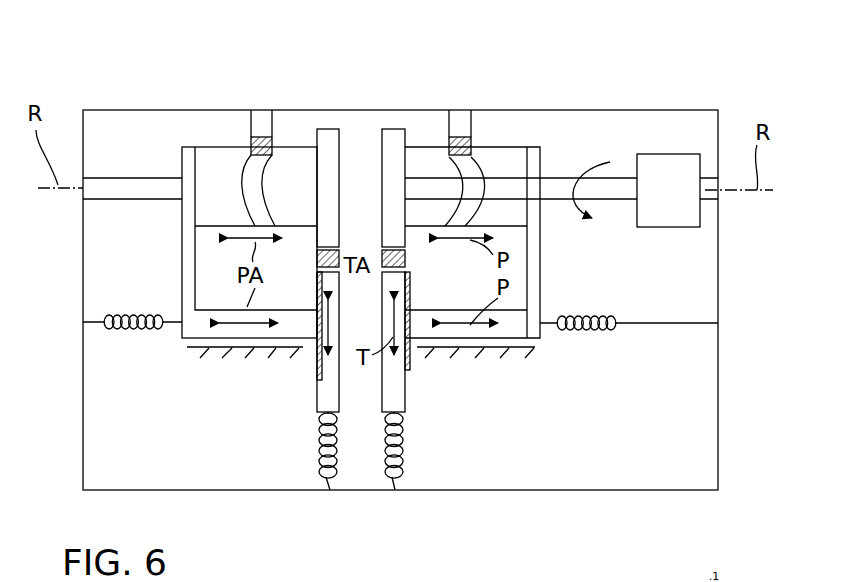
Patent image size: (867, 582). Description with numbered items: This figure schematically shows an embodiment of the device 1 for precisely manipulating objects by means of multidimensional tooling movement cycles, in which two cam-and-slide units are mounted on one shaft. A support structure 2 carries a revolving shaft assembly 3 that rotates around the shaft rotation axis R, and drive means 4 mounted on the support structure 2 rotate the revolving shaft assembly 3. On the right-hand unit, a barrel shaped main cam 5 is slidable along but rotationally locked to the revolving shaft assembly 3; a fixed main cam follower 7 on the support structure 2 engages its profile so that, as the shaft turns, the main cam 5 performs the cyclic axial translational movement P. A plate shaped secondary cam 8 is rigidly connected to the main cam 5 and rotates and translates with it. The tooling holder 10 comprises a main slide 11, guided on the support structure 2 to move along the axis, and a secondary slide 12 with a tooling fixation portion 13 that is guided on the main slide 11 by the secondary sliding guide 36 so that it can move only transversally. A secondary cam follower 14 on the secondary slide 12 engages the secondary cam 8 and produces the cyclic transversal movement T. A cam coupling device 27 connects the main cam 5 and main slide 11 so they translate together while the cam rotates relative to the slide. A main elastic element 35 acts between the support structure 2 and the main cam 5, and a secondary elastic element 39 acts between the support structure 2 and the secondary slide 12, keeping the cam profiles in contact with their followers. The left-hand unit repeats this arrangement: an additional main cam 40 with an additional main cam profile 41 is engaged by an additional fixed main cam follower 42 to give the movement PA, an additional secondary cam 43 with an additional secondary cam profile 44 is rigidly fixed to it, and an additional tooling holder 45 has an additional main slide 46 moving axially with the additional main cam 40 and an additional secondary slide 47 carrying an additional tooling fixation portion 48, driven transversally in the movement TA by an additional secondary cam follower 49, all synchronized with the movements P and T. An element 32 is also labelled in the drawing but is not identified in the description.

The device 1 is at (586, 95).
The support structure 2 is at (718, 135).
The revolving shaft assembly 3 is at (621, 187).
The drive means 4 is at (670, 154).
The main cam 5 is at (513, 150).
The fixed main cam follower 7 is at (472, 137).
The secondary cam 8 is at (398, 130).
The tooling holder 10 is at (418, 300).
The main slide 11 is at (520, 332).
The secondary slide 12 is at (393, 278).
The tooling fixation portion 13 is at (388, 398).
The secondary cam follower 14 is at (384, 184).
The cam coupling device 27 is at (540, 260).
The second bearing surface 32 is at (485, 345).
The main elastic element 35 is at (657, 324).
The secondary sliding guide 36 is at (407, 355).
The secondary elastic element 39 is at (403, 455).
The additional main cam 40 is at (210, 162).
The additional main cam profile 41 is at (255, 183).
The additional fixed main cam follower 42 is at (255, 140).
The additional secondary cam 43 is at (341, 248).
The additional secondary cam profile 44 is at (326, 130).
The additional tooling holder 45 is at (304, 365).
The additional main slide 46 is at (227, 333).
The additional secondary slide 47 is at (337, 383).
The additional tooling fixation portion 48 is at (318, 393).
The additional secondary cam follower 49 is at (383, 250).